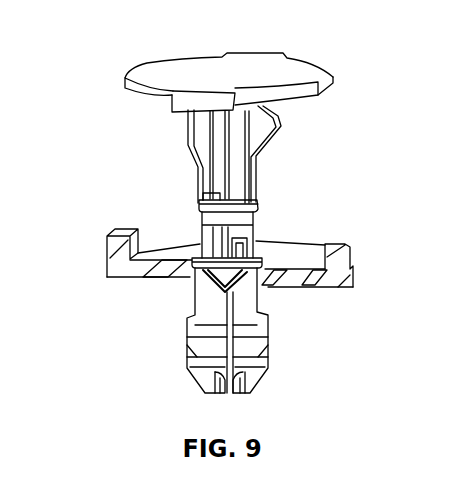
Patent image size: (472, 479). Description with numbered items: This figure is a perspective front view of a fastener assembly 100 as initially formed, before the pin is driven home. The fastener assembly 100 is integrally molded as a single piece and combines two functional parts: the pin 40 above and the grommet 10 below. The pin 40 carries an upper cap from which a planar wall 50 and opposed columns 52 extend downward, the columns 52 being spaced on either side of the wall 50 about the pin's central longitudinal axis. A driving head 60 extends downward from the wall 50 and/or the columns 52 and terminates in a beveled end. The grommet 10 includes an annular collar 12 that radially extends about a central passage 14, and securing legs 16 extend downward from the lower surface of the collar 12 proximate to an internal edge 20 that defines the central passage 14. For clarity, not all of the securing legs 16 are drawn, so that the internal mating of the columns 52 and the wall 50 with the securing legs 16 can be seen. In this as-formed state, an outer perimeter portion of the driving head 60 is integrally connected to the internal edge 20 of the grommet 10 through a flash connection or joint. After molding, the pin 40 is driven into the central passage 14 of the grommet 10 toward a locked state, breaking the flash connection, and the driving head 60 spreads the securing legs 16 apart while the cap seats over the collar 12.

The grommet 10 is at (368, 258).
The annular collar 12 is at (323, 251).
The central passage 14 is at (256, 285).
The securing legs 16 is at (186, 370).
The internal edge 20 is at (200, 243).
The pin 40 is at (332, 46).
The planar wall 50 is at (256, 243).
The columns 52 is at (216, 278).
The driving head 60 is at (256, 258).
The fastener assembly 100 is at (112, 51).